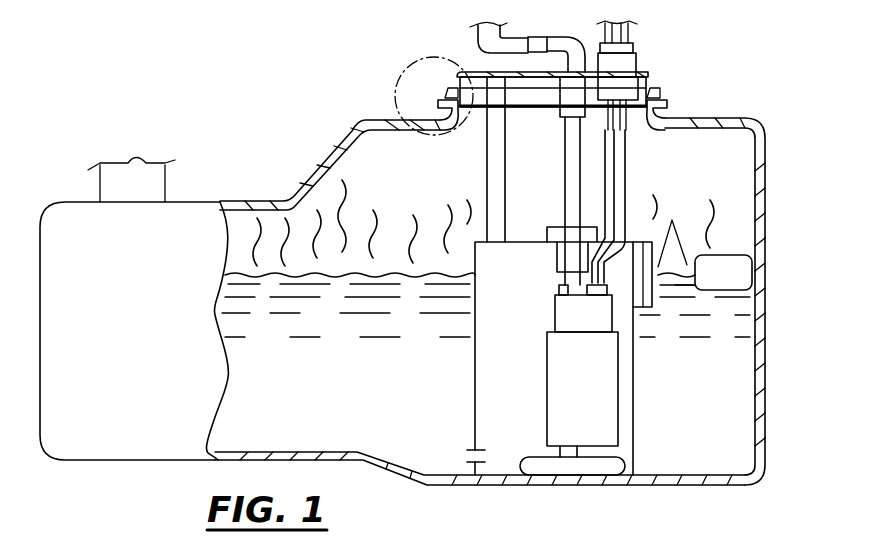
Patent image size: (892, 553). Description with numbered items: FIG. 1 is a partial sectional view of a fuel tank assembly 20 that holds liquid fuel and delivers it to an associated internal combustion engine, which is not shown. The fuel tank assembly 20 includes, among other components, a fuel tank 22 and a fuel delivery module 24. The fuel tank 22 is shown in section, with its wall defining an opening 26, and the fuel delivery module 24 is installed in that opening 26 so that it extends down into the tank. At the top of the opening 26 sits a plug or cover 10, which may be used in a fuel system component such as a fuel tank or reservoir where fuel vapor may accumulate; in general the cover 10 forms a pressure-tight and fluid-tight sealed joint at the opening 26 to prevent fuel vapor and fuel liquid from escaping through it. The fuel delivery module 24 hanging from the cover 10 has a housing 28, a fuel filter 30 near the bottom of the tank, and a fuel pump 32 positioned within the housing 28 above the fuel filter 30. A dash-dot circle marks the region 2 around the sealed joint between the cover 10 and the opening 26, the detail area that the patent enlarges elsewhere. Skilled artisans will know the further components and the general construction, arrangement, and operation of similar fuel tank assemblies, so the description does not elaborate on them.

The detail region shown in FIG. 2 is at (410, 70).
The cover 10 is at (655, 75).
The fuel tank assembly 20 is at (295, 150).
The fuel tank 22 is at (718, 122).
The fuel delivery module 24 is at (475, 380).
The opening 26 is at (457, 113).
The housing 28 is at (500, 392).
The fuel filter 30 is at (607, 467).
The fuel pump 32 is at (597, 387).